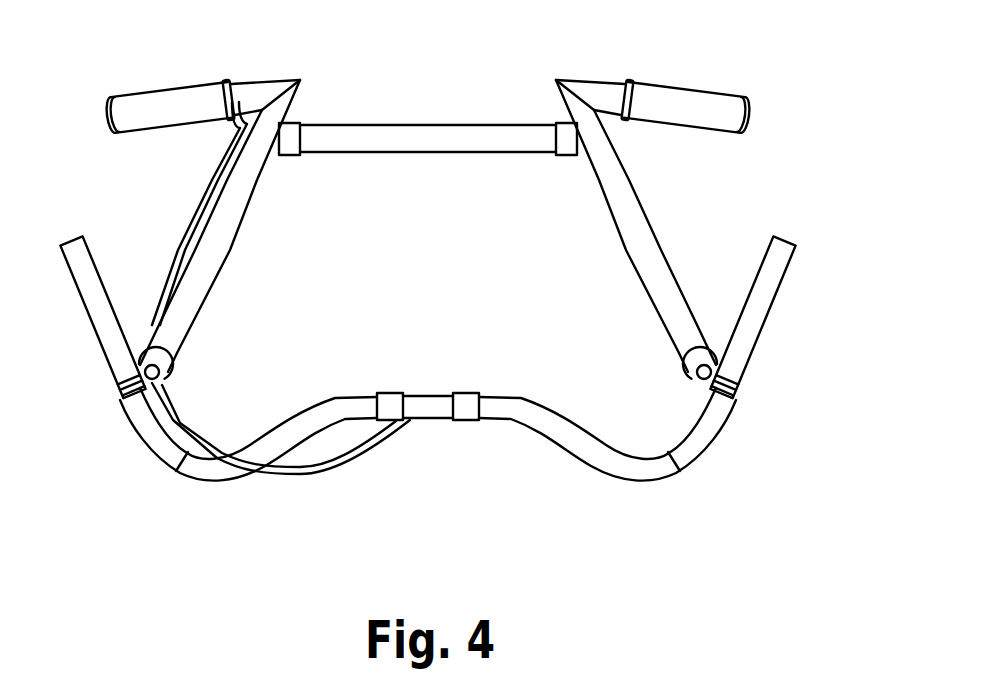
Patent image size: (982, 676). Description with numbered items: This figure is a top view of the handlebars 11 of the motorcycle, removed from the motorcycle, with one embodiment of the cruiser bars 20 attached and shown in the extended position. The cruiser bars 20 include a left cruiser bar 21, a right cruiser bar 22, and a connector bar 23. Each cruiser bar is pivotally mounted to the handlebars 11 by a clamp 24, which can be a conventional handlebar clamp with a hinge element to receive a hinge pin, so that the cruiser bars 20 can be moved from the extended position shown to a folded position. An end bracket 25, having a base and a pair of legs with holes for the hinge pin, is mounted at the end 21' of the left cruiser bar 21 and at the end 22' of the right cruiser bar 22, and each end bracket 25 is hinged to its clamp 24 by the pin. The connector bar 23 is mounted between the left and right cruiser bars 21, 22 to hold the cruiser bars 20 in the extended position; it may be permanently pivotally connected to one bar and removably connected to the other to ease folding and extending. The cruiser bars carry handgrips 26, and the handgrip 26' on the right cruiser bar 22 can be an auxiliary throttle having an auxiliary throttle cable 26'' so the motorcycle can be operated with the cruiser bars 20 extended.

The handlebars 11 is at (700, 448).
The cruiser bars 20 is at (782, 138).
The left cruiser bar 21 is at (631, 226).
The end of left cruiser bar 21' is at (647, 357).
The right cruiser bar 22 is at (226, 226).
The end of right cruiser bar 22' is at (202, 362).
The connector bar 23 is at (453, 135).
The clamp 24 is at (122, 393).
The end bracket 25 is at (158, 373).
The handgrip 26 is at (686, 87).
The auxiliary throttle handgrip 26' is at (169, 75).
The auxiliary throttle cable 26'' is at (254, 288).